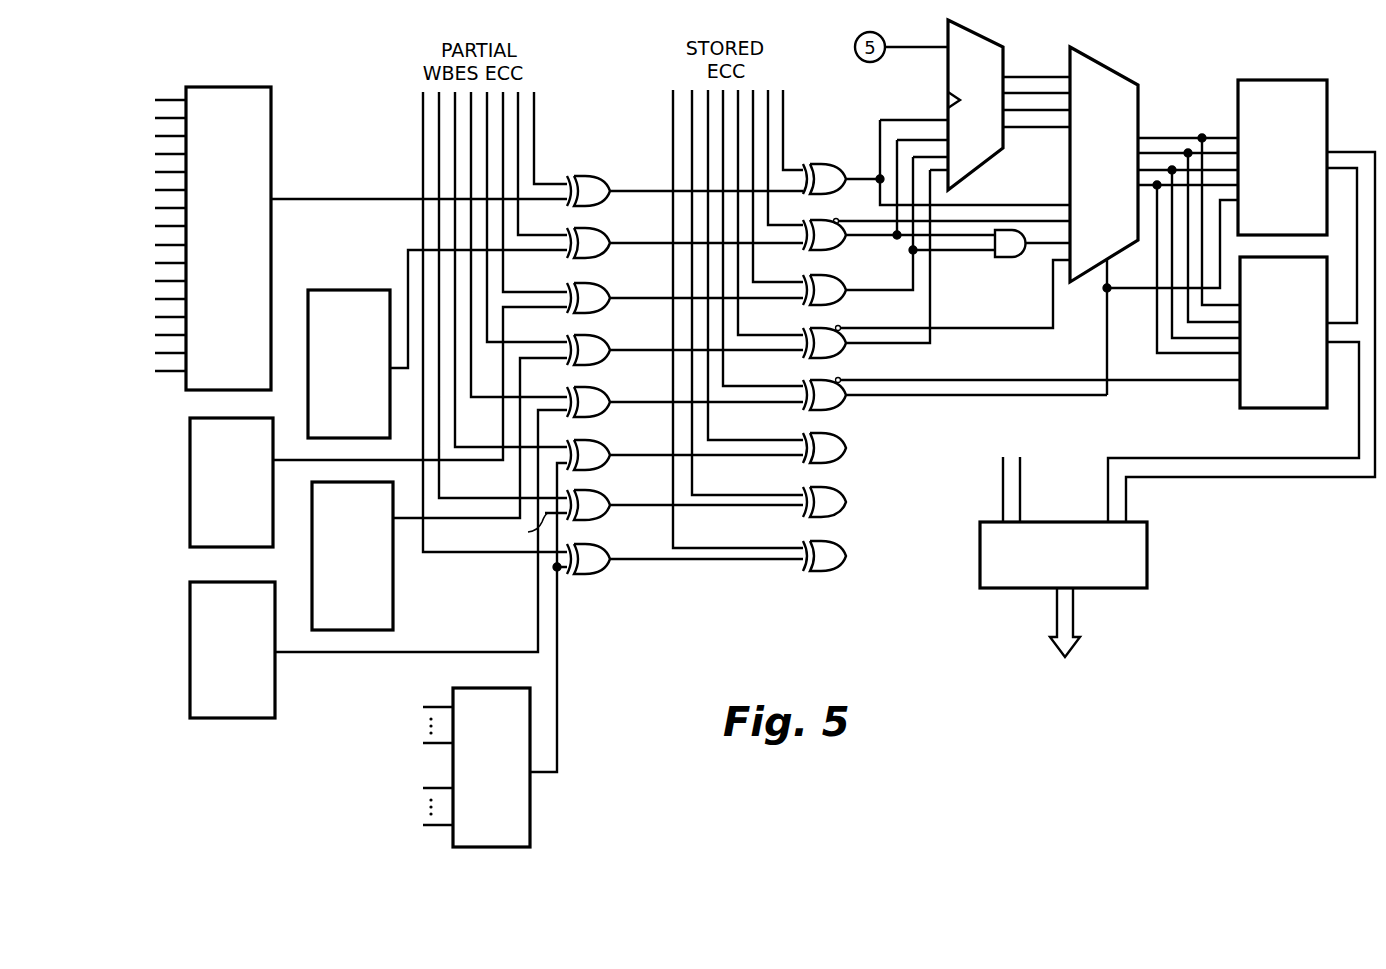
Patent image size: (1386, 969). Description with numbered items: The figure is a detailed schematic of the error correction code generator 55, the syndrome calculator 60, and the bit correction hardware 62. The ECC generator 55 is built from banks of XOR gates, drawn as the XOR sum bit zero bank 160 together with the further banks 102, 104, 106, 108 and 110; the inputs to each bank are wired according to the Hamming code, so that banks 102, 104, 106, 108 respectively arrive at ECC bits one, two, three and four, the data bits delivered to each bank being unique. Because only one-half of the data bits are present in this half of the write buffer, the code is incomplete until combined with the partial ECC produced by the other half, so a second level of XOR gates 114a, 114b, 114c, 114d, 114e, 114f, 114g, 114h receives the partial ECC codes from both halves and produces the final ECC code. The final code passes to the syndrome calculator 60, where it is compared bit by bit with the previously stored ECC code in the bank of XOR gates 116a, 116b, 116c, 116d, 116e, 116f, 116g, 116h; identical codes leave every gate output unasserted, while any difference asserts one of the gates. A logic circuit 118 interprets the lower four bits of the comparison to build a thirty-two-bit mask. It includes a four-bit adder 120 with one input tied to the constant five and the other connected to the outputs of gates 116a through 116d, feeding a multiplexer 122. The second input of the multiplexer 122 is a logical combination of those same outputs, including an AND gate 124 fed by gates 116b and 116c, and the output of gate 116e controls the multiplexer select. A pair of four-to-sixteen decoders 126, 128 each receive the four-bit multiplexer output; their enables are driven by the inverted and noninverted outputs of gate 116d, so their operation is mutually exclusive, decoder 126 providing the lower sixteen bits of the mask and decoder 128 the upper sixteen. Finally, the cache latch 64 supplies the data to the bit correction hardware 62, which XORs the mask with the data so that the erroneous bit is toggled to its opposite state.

The ECC generator 55 is at (375, 113).
The XOR sum bit 0 circuit 160 is at (271, 127).
The XOR gate bank 102 is at (318, 290).
The XOR gate bank 104 is at (190, 466).
The XOR gate bank 106 is at (393, 573).
The XOR gate bank 108 is at (190, 638).
The XOR gate bank 110 is at (533, 813).
The XOR gate 114a is at (588, 173).
The XOR gate 114b is at (598, 229).
The XOR gate 114c is at (600, 284).
The XOR gate 114d is at (600, 336).
The XOR gate 114e is at (600, 392).
The XOR gate 114f is at (603, 444).
The XOR gate 114g is at (605, 497).
The XOR gate 114h is at (600, 573).
The XOR gate 116a is at (814, 163).
The XOR gate 116b is at (839, 250).
The XOR gate 116c is at (845, 303).
The XOR gate 116d is at (850, 358).
The XOR gate 116e is at (850, 410).
The XOR gate 116f is at (850, 438).
The XOR gate 116g is at (848, 508).
The XOR gate 116h is at (845, 565).
The syndrome calculator 60 is at (965, 100).
The 4-bit adder 120 is at (945, 70).
The logic circuit 118 is at (1154, 202).
The multiplexer 122 is at (1128, 72).
The AND gate 124 is at (1016, 262).
The 4:16 decoder 126 is at (1272, 78).
The 4:16 decoder 128 is at (1240, 390).
The cache latch 64 is at (1050, 448).
The bit correction hardware 62 is at (1172, 573).